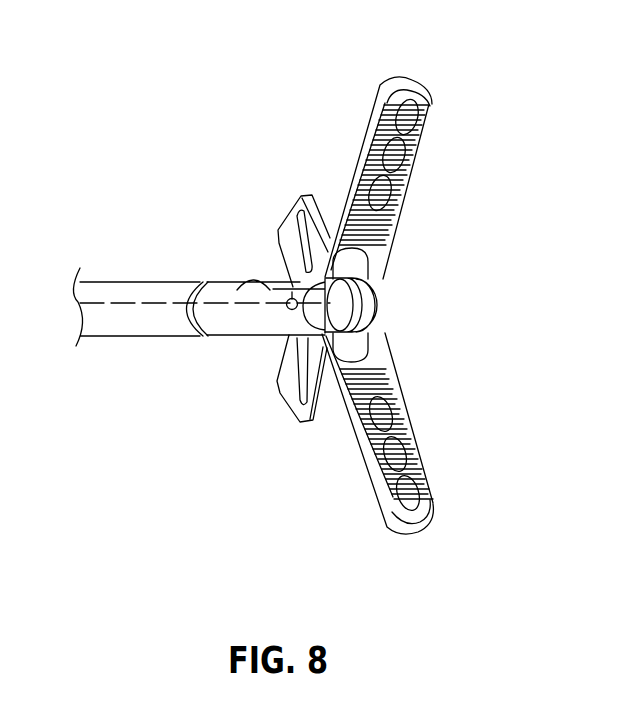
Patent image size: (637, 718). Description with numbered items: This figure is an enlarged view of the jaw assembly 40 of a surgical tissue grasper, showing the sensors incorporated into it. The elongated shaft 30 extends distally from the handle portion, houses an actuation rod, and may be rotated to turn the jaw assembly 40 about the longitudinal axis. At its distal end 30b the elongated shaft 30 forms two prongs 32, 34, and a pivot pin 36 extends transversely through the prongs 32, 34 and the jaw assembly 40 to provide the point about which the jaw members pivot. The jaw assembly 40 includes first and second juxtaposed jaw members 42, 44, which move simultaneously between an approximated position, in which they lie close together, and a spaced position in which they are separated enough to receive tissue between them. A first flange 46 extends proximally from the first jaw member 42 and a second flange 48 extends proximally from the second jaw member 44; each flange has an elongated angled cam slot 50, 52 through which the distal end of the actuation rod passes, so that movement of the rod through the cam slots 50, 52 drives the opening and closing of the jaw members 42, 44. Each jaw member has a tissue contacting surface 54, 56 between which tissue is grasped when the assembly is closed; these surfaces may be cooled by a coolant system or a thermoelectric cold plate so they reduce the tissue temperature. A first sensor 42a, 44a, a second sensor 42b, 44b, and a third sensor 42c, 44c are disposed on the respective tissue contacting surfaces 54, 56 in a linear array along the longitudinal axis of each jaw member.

The elongated shaft 30 is at (97, 276).
The distal end 30b is at (216, 284).
The prong 32 is at (367, 306).
The prong 34 is at (242, 337).
The pivot pin 36 is at (278, 282).
The jaw assembly 40 is at (247, 114).
The first jaw member 42 is at (380, 82).
The first sensor 42a is at (380, 194).
The second sensor 42b is at (396, 156).
The third sensor 42c is at (413, 118).
The second jaw member 44 is at (382, 536).
The first sensor 44a is at (381, 417).
The second sensor 44b is at (395, 457).
The third sensor 44c is at (406, 496).
The first flange 46 is at (302, 428).
The second flange 48 is at (303, 193).
The cam slot 50 is at (292, 394).
The cam slot 52 is at (296, 214).
The tissue contacting surface 54 is at (373, 226).
The tissue contacting surface 56 is at (378, 378).